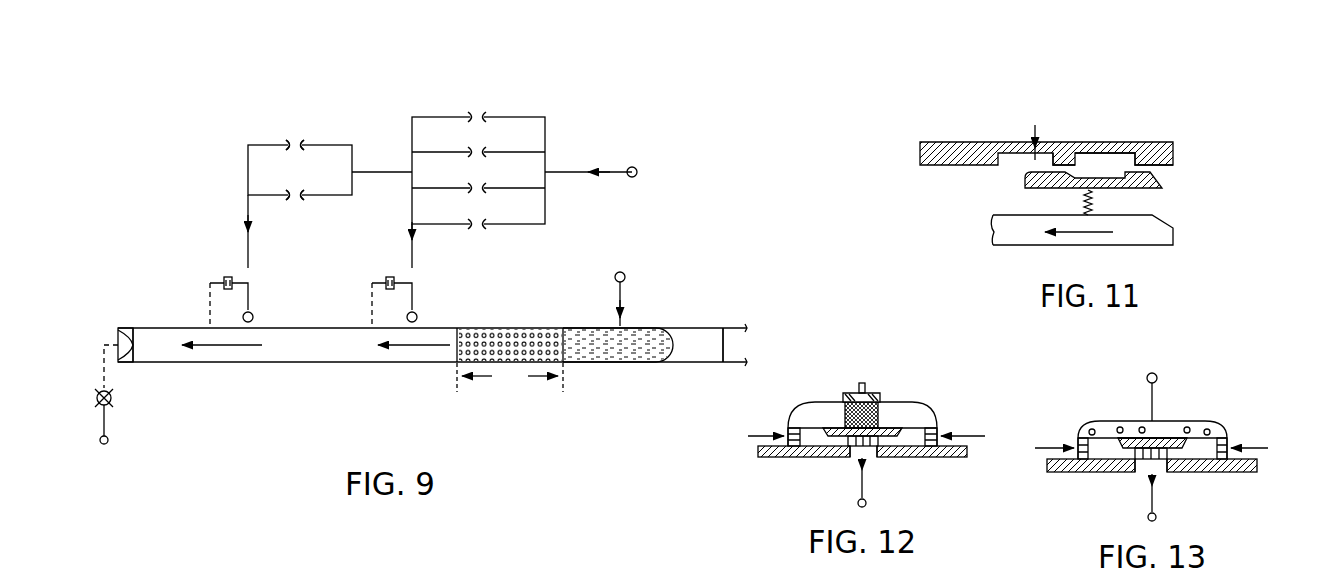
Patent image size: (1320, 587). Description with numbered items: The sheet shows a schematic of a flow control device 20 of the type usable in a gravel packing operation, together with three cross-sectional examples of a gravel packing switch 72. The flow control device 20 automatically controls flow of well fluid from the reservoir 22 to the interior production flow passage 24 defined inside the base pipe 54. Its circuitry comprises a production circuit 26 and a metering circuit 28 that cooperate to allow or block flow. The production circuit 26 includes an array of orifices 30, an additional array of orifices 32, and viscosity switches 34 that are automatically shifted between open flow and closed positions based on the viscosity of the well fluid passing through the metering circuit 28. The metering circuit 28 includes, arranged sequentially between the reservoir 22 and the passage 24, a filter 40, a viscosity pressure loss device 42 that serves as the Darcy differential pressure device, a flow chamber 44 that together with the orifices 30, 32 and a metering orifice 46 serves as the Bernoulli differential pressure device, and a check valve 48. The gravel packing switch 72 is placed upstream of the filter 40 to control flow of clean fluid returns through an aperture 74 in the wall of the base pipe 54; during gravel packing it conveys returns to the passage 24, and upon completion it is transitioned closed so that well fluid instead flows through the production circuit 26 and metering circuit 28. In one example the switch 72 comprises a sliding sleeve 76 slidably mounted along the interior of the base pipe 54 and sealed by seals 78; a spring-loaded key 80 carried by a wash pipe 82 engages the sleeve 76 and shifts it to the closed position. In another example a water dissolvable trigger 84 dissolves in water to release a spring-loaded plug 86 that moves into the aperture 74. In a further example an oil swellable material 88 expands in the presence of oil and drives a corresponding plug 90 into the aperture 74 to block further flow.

In FIG. 9, the flow control device 20 is at (620, 128).
In FIG. 9, the reservoir 22 is at (714, 318).
In FIG. 9, the interior production flow passage 24 is at (200, 391).
In FIG. 9, the production circuit 26 is at (207, 178).
In FIG. 9, the metering circuit 28 is at (664, 312).
In FIG. 9, the array of orifices 30 is at (480, 185).
In FIG. 9, the additional array of orifices 32 is at (302, 191).
In FIG. 9, the viscosity switch 34 is at (234, 268).
In FIG. 9, the filter 40 is at (646, 358).
In FIG. 9, the viscosity pressure loss device 42 is at (457, 352).
In FIG. 9, the flow chamber 44 is at (247, 364).
In FIG. 9, the metering orifice 46 is at (120, 331).
In FIG. 9, the check valve 48 is at (112, 394).
In FIG. 11, the base pipe 54 is at (950, 152).
In FIG. 12, the base pipe 54 is at (796, 457).
In FIG. 13, the base pipe 54 is at (1087, 467).
In FIG. 9, the gravel packing switch 72 is at (735, 326).
In FIG. 11, the gravel packing switch 72 is at (1055, 132).
In FIG. 12, the gravel packing switch 72 is at (930, 392).
In FIG. 13, the gravel packing switch 72 is at (1217, 410).
In FIG. 12, the aperture 74 is at (883, 449).
In FIG. 13, the aperture 74 is at (1175, 462).
In FIG. 11, the sliding sleeve 76 is at (1090, 148).
In FIG. 11, the seals 78 is at (1063, 148).
In FIG. 11, the key 80 is at (1025, 182).
In FIG. 11, the wash pipe 82 is at (1003, 247).
In FIG. 12, the water dissolvable trigger 84 is at (852, 395).
In FIG. 12, the spring-loaded plug 86 is at (830, 432).
In FIG. 13, the oil swellable material 88 is at (1112, 429).
In FIG. 13, the plug 90 is at (1116, 443).